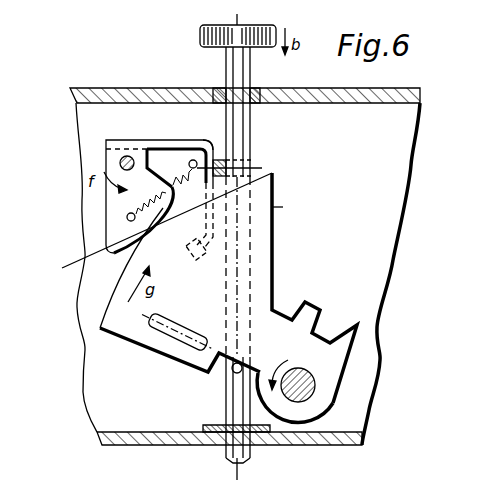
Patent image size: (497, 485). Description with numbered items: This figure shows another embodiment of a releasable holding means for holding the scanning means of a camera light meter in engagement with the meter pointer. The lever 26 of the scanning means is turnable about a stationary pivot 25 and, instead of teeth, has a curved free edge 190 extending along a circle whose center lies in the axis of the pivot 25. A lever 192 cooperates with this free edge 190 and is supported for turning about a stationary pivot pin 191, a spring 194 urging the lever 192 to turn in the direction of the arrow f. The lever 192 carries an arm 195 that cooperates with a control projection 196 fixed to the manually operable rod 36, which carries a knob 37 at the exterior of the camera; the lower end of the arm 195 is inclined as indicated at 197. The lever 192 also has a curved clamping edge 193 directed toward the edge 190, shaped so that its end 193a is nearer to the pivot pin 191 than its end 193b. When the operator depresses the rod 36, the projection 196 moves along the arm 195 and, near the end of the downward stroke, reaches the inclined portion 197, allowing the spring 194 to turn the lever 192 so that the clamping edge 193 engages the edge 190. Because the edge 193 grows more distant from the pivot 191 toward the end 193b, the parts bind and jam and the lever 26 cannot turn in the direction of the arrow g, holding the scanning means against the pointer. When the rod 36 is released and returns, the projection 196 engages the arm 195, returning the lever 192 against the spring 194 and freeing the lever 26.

The stationary pivot 25 is at (300, 386).
The lever 26 is at (260, 282).
The rod 36 is at (237, 405).
The knob 37 is at (203, 48).
The curved free edge 190 is at (179, 214).
The stationary pivot pin 191 is at (126, 158).
The lever 192 is at (113, 205).
The clamping edge 193 is at (142, 232).
The end of clamping edge 193a is at (300, 213).
The end of clamping edge 193b is at (145, 227).
The spring 194 is at (171, 184).
The arm 195 is at (212, 143).
The control projection 196 is at (163, 212).
The inclined portion 197 is at (200, 255).